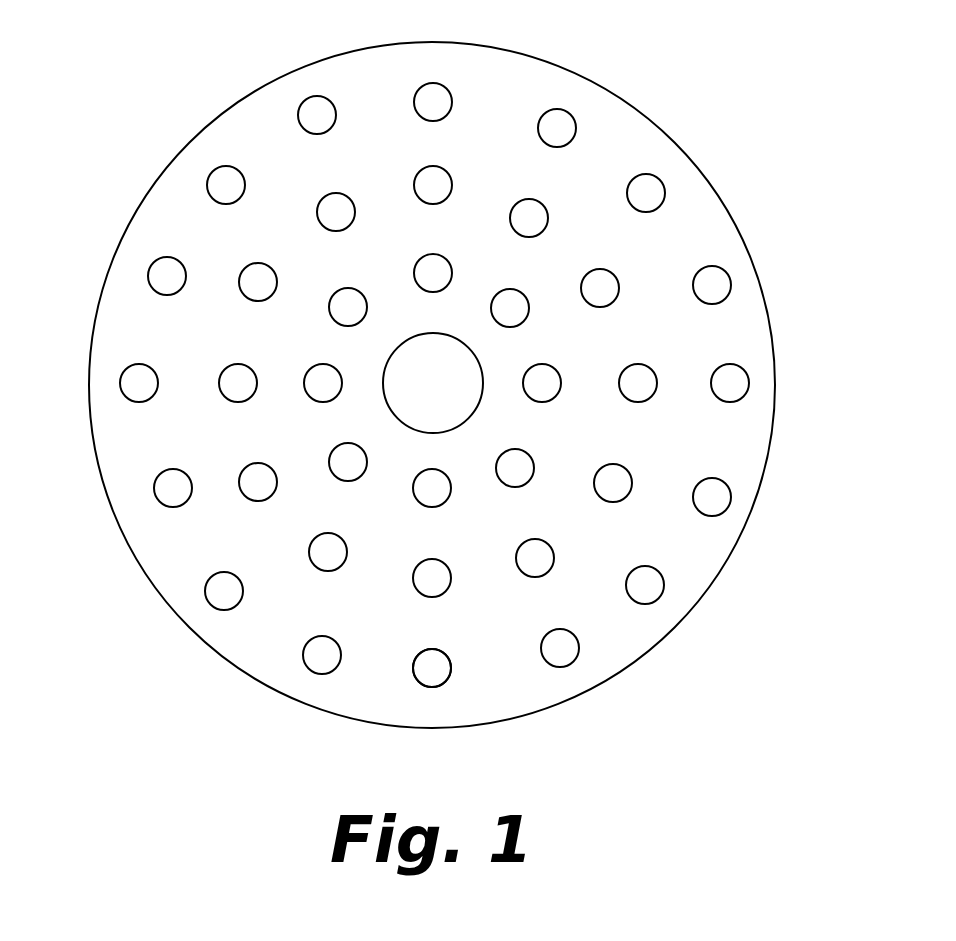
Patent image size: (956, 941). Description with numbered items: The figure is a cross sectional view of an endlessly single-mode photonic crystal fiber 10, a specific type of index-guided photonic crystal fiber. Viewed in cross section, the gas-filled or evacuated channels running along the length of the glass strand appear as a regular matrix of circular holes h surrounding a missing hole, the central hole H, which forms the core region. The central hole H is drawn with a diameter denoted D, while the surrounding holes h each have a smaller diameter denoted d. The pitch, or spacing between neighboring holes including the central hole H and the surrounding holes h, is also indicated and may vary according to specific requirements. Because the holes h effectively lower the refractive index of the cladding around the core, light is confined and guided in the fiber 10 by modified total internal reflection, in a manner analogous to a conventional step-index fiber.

The endlessly single-mode photonic crystal fiber 10 is at (712, 582).
The circular holes h is at (731, 279).
The diameter of central hole D is at (482, 383).
The central hole H is at (383, 364).
The diameter of surrounding holes d is at (432, 622).